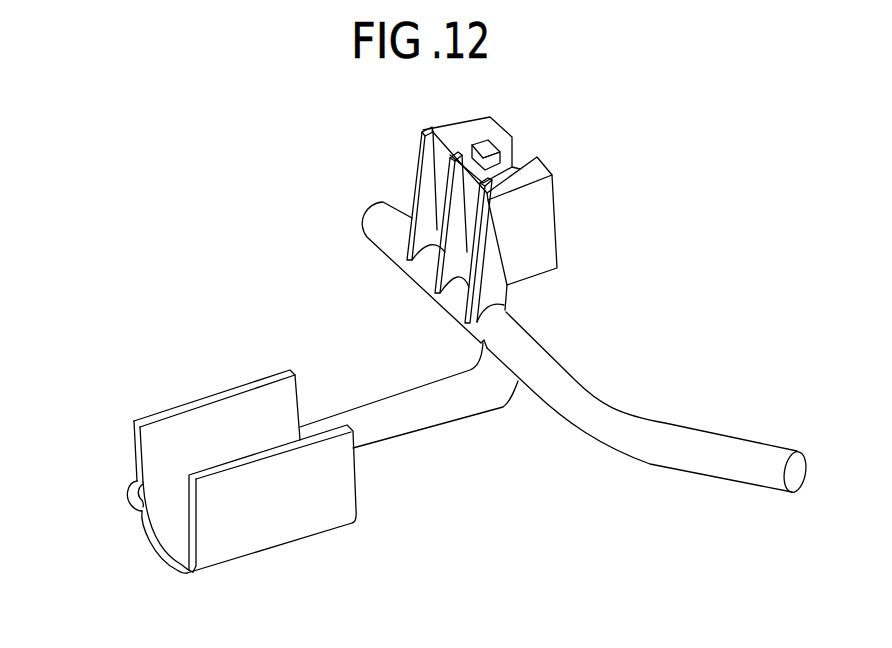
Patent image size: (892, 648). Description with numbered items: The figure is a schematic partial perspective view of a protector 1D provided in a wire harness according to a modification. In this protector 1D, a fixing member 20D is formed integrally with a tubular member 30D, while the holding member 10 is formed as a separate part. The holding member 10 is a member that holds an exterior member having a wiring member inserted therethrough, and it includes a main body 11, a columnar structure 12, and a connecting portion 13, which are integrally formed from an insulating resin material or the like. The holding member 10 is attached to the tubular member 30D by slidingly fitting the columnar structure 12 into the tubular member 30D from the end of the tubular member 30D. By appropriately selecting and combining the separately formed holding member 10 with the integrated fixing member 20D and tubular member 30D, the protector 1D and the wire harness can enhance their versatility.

The protector 1D is at (582, 130).
The fixing member 20D is at (585, 219).
The tubular member 30D is at (513, 441).
The holding member 10 is at (135, 560).
The main body 11 is at (273, 505).
The columnar structure 12 is at (118, 486).
The connecting portion 13 is at (132, 498).